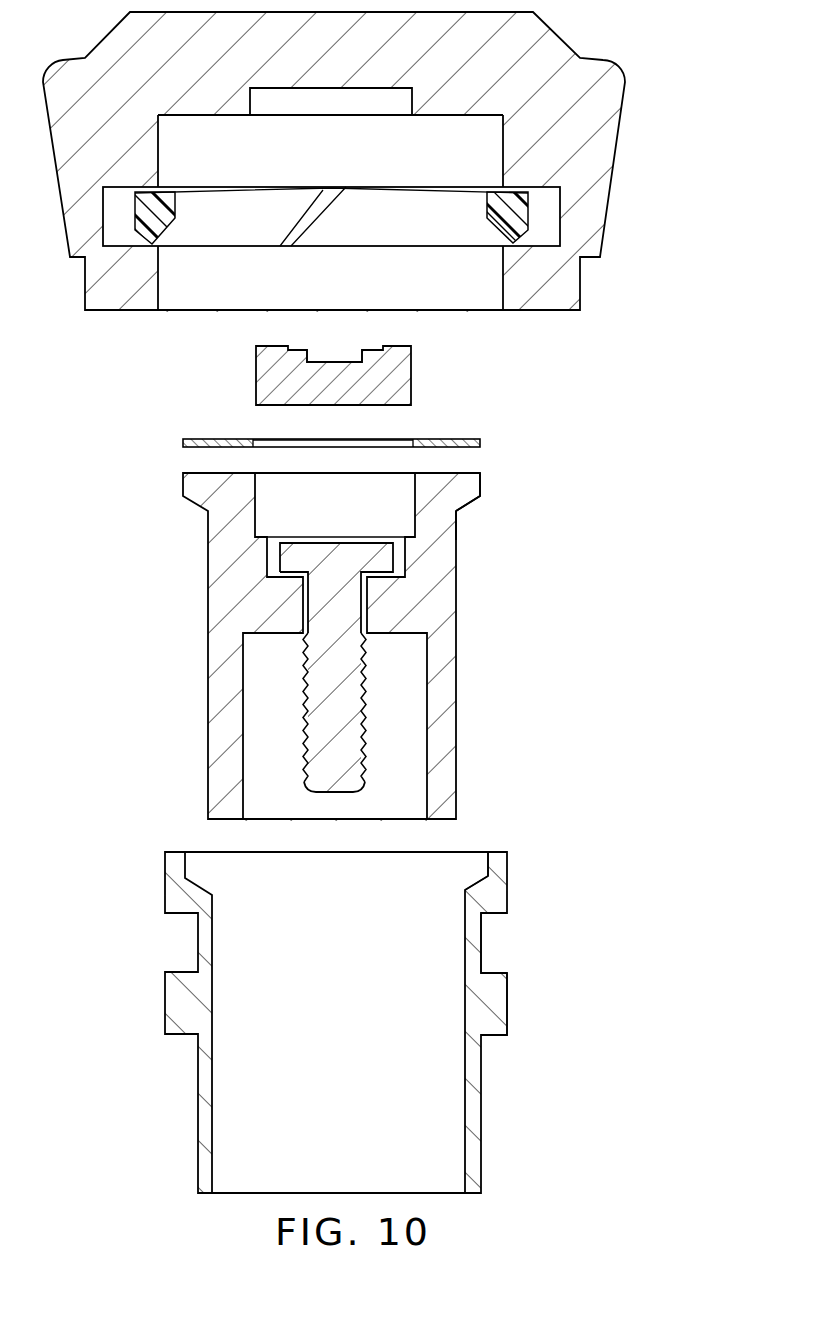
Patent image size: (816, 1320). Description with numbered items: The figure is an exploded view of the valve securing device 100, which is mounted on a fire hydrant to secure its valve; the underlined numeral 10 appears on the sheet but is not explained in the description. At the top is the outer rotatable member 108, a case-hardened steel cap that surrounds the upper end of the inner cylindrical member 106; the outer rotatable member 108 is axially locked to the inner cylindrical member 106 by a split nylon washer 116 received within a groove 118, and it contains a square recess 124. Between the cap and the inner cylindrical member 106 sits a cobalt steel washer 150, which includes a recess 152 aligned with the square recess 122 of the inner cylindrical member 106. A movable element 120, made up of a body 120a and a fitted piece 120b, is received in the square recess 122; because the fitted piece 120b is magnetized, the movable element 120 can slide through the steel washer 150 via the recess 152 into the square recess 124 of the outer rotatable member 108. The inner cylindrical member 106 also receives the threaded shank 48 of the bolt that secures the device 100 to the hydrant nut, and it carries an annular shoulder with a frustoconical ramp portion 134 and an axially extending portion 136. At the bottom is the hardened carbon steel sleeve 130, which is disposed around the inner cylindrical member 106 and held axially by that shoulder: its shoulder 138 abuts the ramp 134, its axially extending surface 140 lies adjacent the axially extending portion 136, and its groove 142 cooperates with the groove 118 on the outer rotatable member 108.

The fluid treatment device 10 is at (104, 1161).
The threaded shank 48 is at (323, 705).
The valve securing device 100 is at (622, 63).
The inner cylindrical member 106 is at (445, 642).
The outer rotatable member 108 is at (600, 198).
The split nylon washer 116 is at (158, 223).
The groove 118 is at (543, 230).
The movable element 120 is at (412, 372).
The body 120a is at (384, 393).
The fitted piece 120b is at (320, 350).
The square recess 122 is at (352, 527).
The square recess 124 is at (372, 102).
The hardened carbon steel sleeve 130 is at (199, 1075).
The frustoconical ramp portion 134 is at (465, 508).
The axially extending portion 136 is at (483, 483).
The shoulder 138 is at (468, 884).
The axially extending surface 140 is at (488, 862).
The groove 142 is at (480, 938).
The cobalt steel washer 150 is at (480, 446).
The recess 152 is at (267, 443).